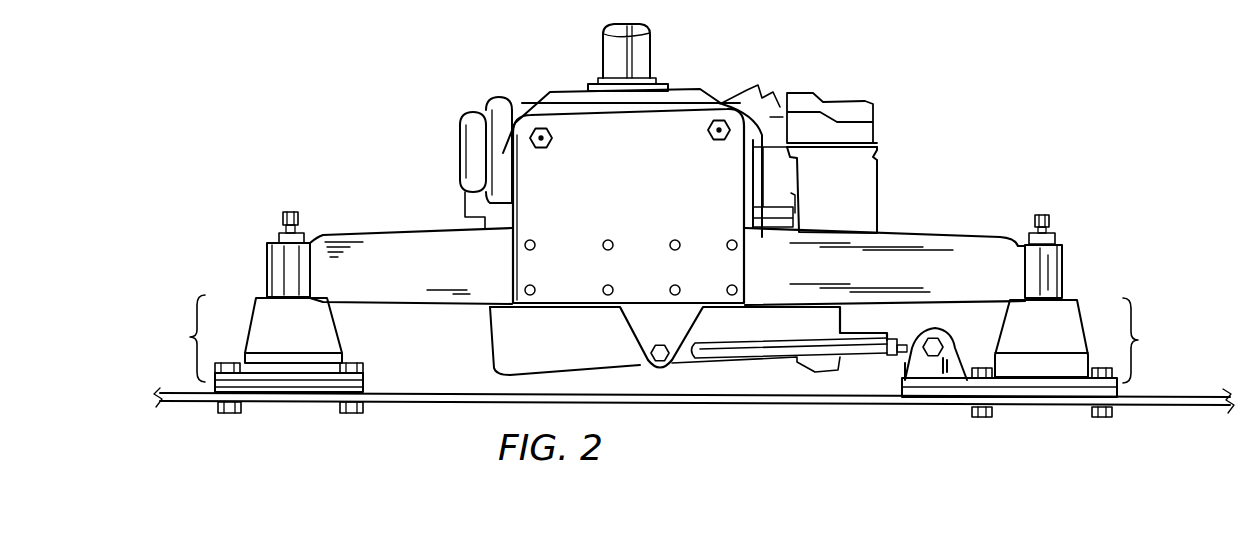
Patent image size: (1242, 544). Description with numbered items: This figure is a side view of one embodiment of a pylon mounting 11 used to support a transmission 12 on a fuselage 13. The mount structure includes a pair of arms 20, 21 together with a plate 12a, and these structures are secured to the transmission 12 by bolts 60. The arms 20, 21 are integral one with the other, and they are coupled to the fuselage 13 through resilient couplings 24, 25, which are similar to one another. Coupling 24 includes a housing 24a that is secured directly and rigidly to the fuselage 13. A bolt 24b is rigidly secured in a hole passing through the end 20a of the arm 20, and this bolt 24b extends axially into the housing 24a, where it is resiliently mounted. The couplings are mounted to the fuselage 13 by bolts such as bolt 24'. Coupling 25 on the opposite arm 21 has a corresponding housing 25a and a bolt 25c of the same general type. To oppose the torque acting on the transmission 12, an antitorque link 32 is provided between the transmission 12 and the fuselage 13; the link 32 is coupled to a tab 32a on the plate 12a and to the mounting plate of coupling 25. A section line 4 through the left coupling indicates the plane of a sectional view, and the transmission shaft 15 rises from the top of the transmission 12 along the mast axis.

The section line 4- 4 is at (292, 130).
The pylon mounting 11 is at (385, 149).
The transmission 12 is at (767, 182).
The plate 12a is at (642, 163).
The fuselage 13 is at (442, 402).
The drive shaft 15 is at (608, 40).
The arm 20 is at (435, 270).
The end of the arm 20a is at (288, 265).
The arm 21 is at (900, 273).
The coupling 24 is at (263, 354).
The housing 24a is at (308, 332).
The bolt 24b is at (298, 233).
The bolt 24' is at (373, 351).
The coupling 25 is at (1034, 316).
The right mount bracket 25a is at (1058, 333).
The right mount nut 25c is at (1105, 366).
The antitorque link 32 is at (805, 350).
The tab 32a is at (667, 335).
The bolts 60 is at (547, 141).